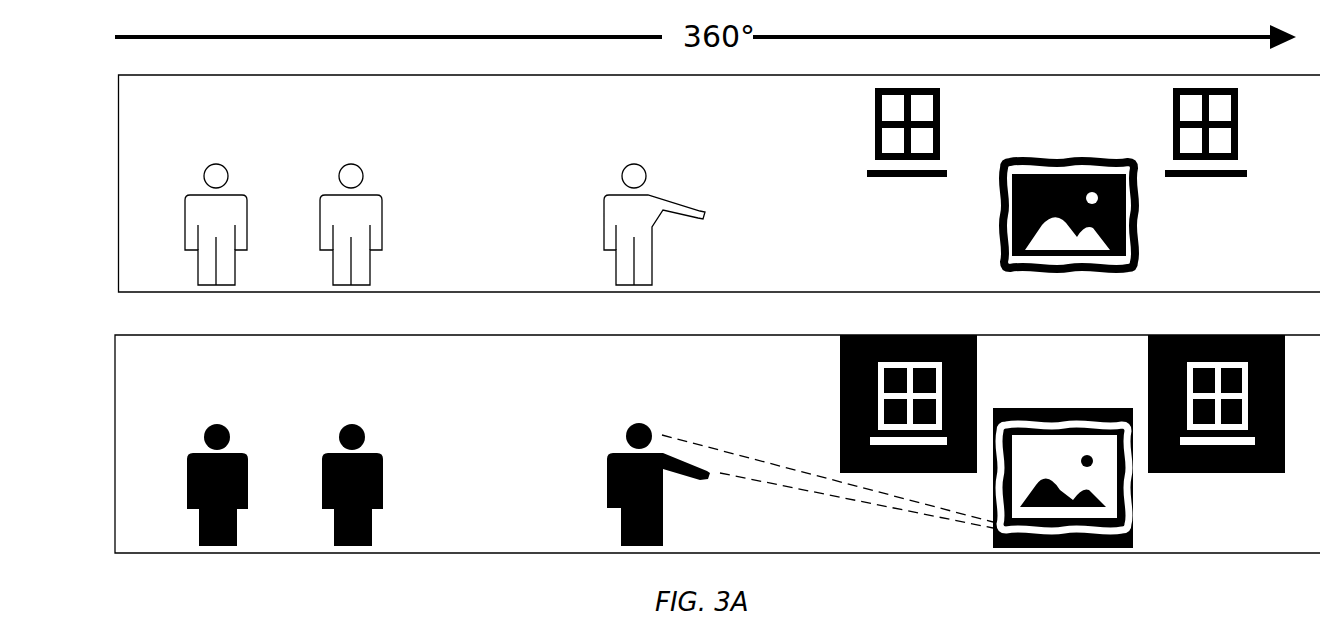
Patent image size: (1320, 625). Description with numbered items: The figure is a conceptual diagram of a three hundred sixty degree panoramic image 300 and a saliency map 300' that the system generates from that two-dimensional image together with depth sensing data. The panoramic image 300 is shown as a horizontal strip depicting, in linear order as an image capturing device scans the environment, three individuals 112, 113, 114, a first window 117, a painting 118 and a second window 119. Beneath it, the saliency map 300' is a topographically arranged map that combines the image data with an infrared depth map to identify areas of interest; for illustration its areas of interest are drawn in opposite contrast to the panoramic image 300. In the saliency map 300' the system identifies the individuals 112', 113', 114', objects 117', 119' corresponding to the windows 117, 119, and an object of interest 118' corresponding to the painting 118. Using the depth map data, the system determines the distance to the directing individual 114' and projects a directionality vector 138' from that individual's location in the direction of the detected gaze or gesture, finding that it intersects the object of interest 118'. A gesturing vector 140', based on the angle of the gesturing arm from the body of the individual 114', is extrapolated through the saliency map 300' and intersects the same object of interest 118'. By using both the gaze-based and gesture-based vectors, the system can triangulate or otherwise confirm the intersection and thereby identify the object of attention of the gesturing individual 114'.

The panoramic image 300 is at (681, 183).
The individual 112 is at (185, 209).
The individual 113 is at (316, 209).
The individual 114 is at (616, 209).
The window 117 is at (867, 132).
The painting 118 is at (1055, 184).
The window 119 is at (1240, 132).
The saliency map 300' is at (676, 444).
The individual 112' is at (184, 469).
The individual 113' is at (313, 469).
The gesturing individual 114' is at (615, 469).
The object 117' is at (862, 404).
The object of interest 118' is at (1063, 448).
The object 119' is at (1226, 434).
The directionality vector 138' is at (827, 466).
The gesturing vector 140' is at (828, 500).